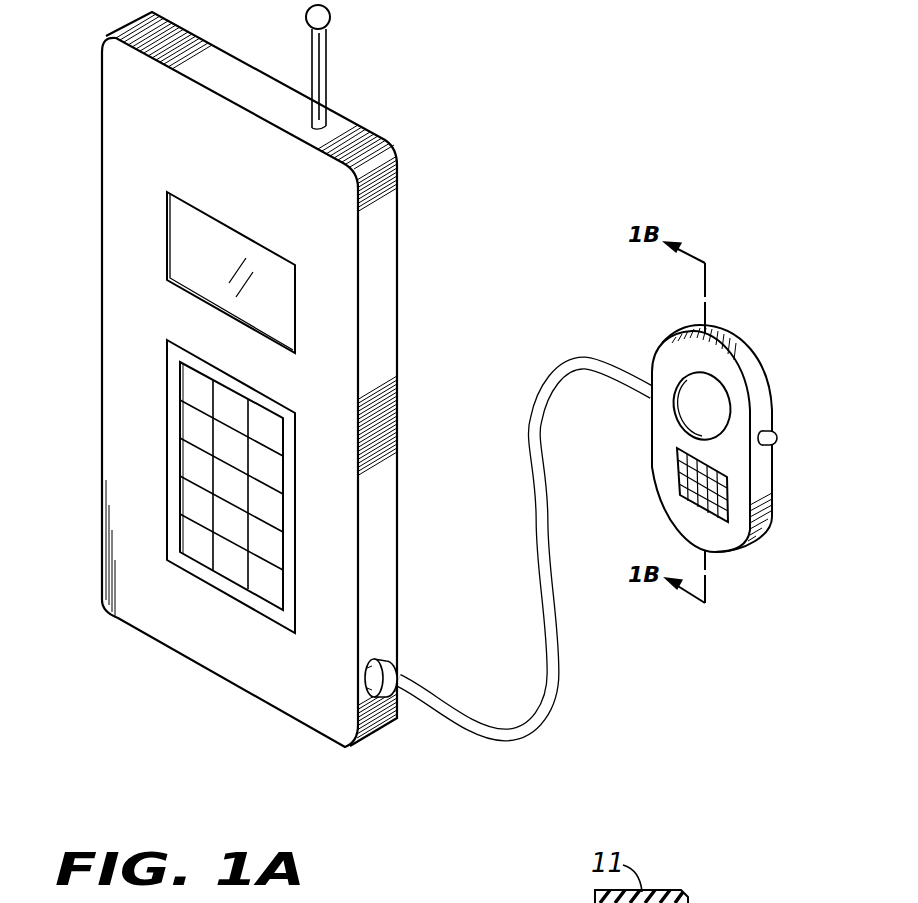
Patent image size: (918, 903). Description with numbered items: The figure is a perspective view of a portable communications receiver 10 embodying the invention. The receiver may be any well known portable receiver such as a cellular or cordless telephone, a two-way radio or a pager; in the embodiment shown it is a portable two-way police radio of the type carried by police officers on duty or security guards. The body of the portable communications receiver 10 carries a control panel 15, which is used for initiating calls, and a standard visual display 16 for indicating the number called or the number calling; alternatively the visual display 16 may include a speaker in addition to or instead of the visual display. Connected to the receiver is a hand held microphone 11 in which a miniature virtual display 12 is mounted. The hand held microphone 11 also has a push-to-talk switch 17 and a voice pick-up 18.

The portable communications receiver 10 is at (177, 103).
The hand held microphone 11 is at (763, 477).
The miniature virtual display 12 is at (712, 398).
The control panel 15 is at (200, 425).
The visual display 16 is at (212, 258).
The push-to-talk switch 17 is at (778, 442).
The voice pick-up 18 is at (718, 497).